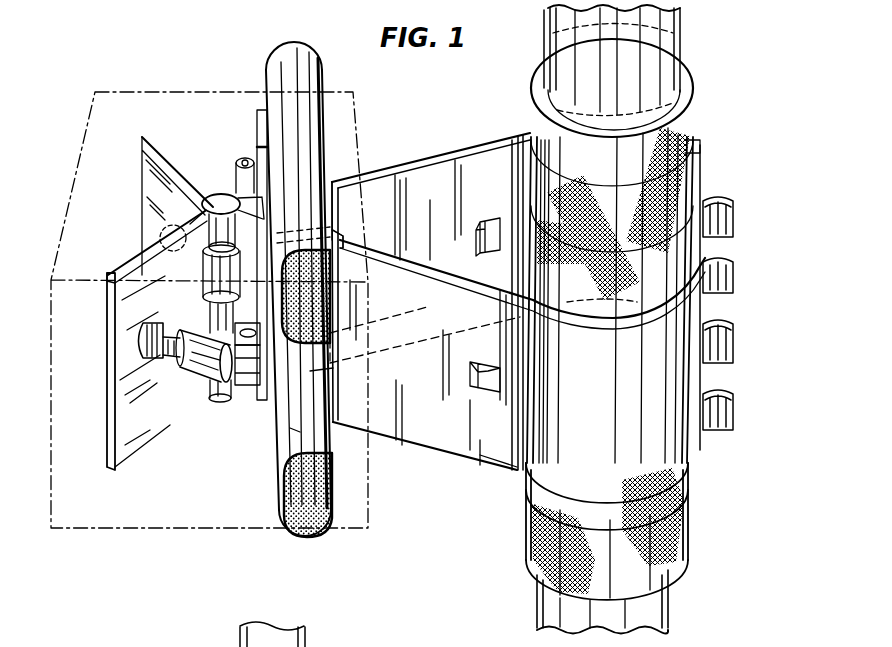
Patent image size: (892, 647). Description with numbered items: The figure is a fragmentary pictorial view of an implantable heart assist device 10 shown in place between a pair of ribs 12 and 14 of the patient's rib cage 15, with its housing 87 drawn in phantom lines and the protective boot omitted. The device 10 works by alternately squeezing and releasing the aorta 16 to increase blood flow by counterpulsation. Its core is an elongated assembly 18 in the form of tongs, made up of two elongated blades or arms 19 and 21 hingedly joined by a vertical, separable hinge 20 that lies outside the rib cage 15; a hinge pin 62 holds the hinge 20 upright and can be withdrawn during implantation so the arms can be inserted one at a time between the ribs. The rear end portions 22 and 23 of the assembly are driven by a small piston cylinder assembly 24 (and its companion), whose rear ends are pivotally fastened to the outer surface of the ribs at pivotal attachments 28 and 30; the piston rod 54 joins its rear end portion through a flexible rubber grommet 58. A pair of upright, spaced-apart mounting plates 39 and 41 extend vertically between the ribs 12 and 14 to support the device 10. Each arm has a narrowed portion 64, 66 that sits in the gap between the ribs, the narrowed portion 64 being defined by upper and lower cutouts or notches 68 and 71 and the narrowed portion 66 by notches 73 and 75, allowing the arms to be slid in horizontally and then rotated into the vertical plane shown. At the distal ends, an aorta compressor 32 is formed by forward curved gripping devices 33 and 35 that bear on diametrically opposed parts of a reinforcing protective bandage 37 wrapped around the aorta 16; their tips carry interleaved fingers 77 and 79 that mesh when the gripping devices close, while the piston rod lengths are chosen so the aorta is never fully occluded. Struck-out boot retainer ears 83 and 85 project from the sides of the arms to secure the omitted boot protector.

The heart assist device 10 is at (140, 529).
The rib 12 is at (283, 55).
The rib 14 is at (295, 497).
The rib cage 15 is at (280, 541).
The aorta 16 is at (575, 66).
The elongated assembly 18 is at (463, 484).
The arm 19 is at (487, 453).
The hinge 20 is at (213, 383).
The arm 21 is at (453, 175).
The rear end portion 22 is at (127, 437).
The rear end portion 23 is at (152, 167).
The piston cylinder assembly 24 is at (200, 385).
The pivotal attachment 28 is at (257, 380).
The pivotal attachment 30 is at (243, 161).
The aorta compressor 32 is at (518, 485).
The curved gripping device 33 is at (633, 470).
The curved gripping device 35 is at (693, 147).
The reinforcing protective bandage 37 is at (535, 552).
The mounting plate 39 is at (268, 436).
The mounting plate 41 is at (262, 120).
The piston rod 54 is at (175, 358).
The flexible rubber grommet 58 is at (138, 334).
The hinge pin 62 is at (205, 207).
The narrowed portion 64 is at (290, 428).
The narrowed portion 66 is at (340, 237).
The cutout or notch 68 is at (330, 268).
The cutout or notch 71 is at (331, 397).
The cutout or notch 73 is at (333, 237).
The cutout or notch 75 is at (413, 310).
The interleaved fingers 77 is at (715, 424).
The interleaved fingers 79 is at (720, 207).
The boot retainer ear 83 is at (477, 381).
The boot retainer ear 85 is at (476, 217).
The housing 87 is at (48, 503).